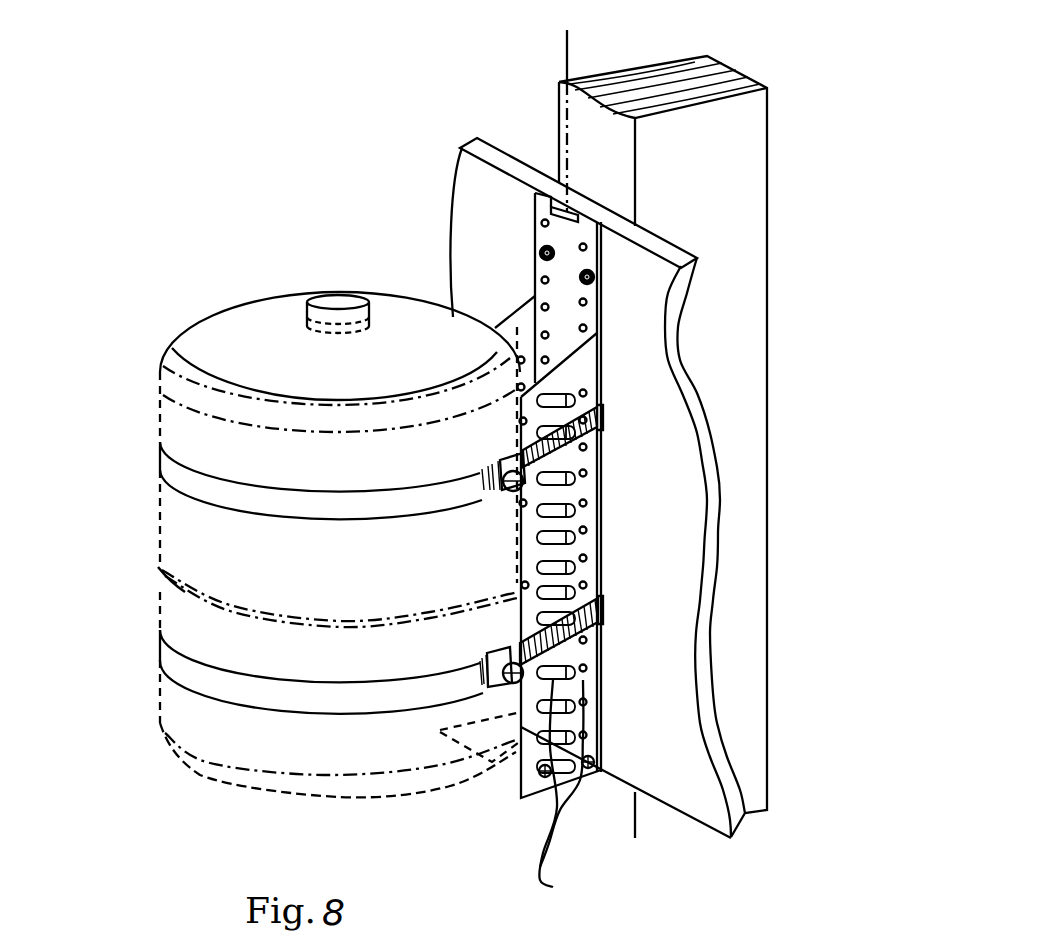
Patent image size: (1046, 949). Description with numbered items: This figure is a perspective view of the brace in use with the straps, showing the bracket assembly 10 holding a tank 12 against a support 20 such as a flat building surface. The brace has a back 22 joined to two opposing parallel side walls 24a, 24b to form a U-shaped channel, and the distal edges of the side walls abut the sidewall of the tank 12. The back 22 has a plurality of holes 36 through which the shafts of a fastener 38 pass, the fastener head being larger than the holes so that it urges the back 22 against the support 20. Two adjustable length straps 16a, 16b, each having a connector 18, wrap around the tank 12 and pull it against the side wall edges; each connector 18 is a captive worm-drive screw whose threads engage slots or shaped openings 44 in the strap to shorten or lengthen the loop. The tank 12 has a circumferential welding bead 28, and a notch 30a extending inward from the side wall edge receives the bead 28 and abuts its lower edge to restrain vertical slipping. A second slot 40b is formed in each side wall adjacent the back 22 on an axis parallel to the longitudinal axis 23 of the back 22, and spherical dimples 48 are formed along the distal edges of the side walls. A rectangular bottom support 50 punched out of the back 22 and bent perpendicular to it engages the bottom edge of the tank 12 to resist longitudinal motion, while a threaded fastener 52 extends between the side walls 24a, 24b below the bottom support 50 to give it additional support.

The bracket assembly 10 is at (607, 713).
The tank 12 is at (255, 302).
The strap 16a is at (173, 477).
The strap 16b is at (173, 663).
The connector 18 is at (503, 686).
The support 20 is at (510, 163).
The back 22 is at (567, 310).
The longitudinal axis 23 is at (563, 48).
The side wall 24a is at (577, 368).
The side wall 24b is at (521, 326).
The welding bead 28 is at (162, 585).
The notch 30a is at (600, 536).
The holes 36 is at (541, 222).
The fastener 38 is at (580, 278).
The second slot 40b is at (603, 640).
The slots or shaped openings 44 is at (598, 428).
The dimples 48 is at (598, 573).
The bottom support 50 is at (500, 757).
The threaded fastener 52 is at (570, 797).